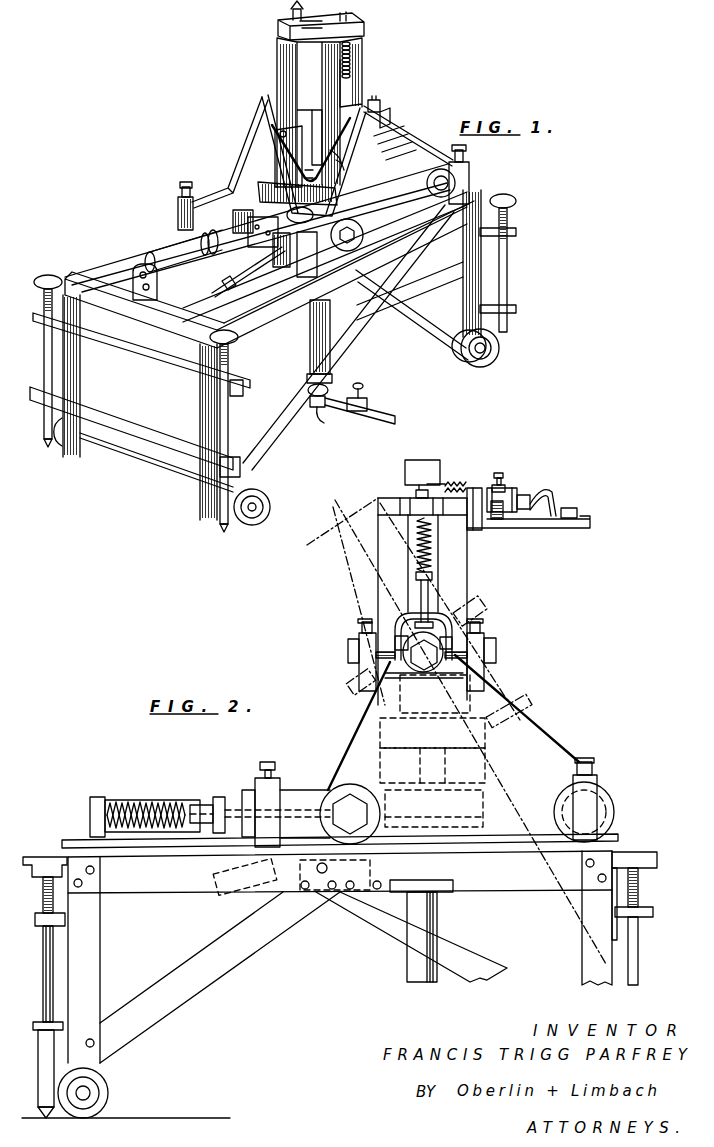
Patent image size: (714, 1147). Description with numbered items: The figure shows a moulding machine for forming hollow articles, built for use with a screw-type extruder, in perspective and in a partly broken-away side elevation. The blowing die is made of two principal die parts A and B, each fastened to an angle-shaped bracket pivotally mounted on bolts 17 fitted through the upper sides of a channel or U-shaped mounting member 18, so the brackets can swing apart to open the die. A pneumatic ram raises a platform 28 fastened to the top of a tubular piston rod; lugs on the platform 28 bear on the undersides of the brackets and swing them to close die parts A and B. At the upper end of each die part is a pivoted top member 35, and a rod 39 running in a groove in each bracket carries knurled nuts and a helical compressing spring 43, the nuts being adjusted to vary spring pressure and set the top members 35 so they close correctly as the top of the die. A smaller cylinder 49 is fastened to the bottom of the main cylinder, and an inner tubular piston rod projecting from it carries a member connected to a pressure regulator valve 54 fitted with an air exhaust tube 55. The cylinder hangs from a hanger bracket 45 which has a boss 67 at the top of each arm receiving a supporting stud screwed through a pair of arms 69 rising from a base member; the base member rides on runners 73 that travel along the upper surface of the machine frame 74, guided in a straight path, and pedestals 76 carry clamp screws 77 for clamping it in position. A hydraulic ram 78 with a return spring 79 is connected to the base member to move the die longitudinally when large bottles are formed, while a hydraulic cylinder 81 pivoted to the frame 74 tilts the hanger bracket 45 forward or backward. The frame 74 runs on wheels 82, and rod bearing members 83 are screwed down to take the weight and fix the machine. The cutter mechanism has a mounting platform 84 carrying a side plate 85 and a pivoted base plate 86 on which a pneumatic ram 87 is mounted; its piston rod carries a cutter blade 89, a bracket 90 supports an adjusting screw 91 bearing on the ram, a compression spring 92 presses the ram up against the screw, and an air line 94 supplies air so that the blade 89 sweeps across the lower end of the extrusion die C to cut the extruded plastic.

In FIG. 2, the bolts 17 is at (360, 655).
In FIG. 1, the mounting member 18 is at (278, 148).
In FIG. 2, the mounting member 18 is at (378, 705).
In FIG. 1, the platform 28 is at (345, 160).
In FIG. 1, the top member 35 is at (290, 18).
In FIG. 1, the rod 39 is at (350, 84).
In FIG. 2, the rod 39 is at (430, 592).
In FIG. 1, the helical compressing spring 43 is at (352, 57).
In FIG. 1, the hanger bracket 45 is at (262, 188).
In FIG. 1, the cylinder 49 is at (333, 357).
In FIG. 2, the cylinder 49 is at (437, 913).
In FIG. 1, the pressure regulator valve 54 is at (368, 400).
In FIG. 1, the air exhaust tube 55 is at (388, 417).
In FIG. 1, the boss 67 is at (381, 104).
In FIG. 1, the arms 69 is at (322, 155).
In FIG. 2, the arms 69 is at (456, 731).
In FIG. 1, the runners 73 is at (470, 170).
In FIG. 2, the runners 73 is at (340, 785).
In FIG. 1, the machine frame 74 is at (100, 258).
In FIG. 2, the machine frame 74 is at (156, 918).
In FIG. 1, the pedestals 76 is at (178, 199).
In FIG. 2, the pedestals 76 is at (260, 793).
In FIG. 2, the clamp screws 77 is at (270, 762).
In FIG. 1, the hydraulic ram 78 is at (165, 255).
In FIG. 2, the hydraulic ram 78 is at (217, 797).
In FIG. 2, the return spring 79 is at (161, 802).
In FIG. 1, the hydraulic cylinder 81 is at (255, 260).
In FIG. 2, the hydraulic cylinder 81 is at (293, 893).
In FIG. 1, the wheels 82 is at (268, 497).
In FIG. 2, the wheels 82 is at (110, 1090).
In FIG. 1, the rod bearing members 83 is at (510, 320).
In FIG. 2, the rod bearing members 83 is at (40, 1078).
In FIG. 2, the mounting platform 84 is at (548, 528).
In FIG. 2, the side plate 85 is at (478, 530).
In FIG. 2, the base plate 86 is at (570, 508).
In FIG. 2, the pneumatic ram 87 is at (525, 493).
In FIG. 2, the cutter blade 89 is at (452, 482).
In FIG. 2, the bracket 90 is at (506, 484).
In FIG. 2, the adjusting screw 91 is at (499, 473).
In FIG. 2, the compression spring 92 is at (505, 520).
In FIG. 2, the air line 94 is at (552, 492).
In FIG. 1, the die part A is at (278, 33).
In FIG. 1, the die part B is at (300, 58).
In FIG. 2, the extrusion die C is at (422, 479).